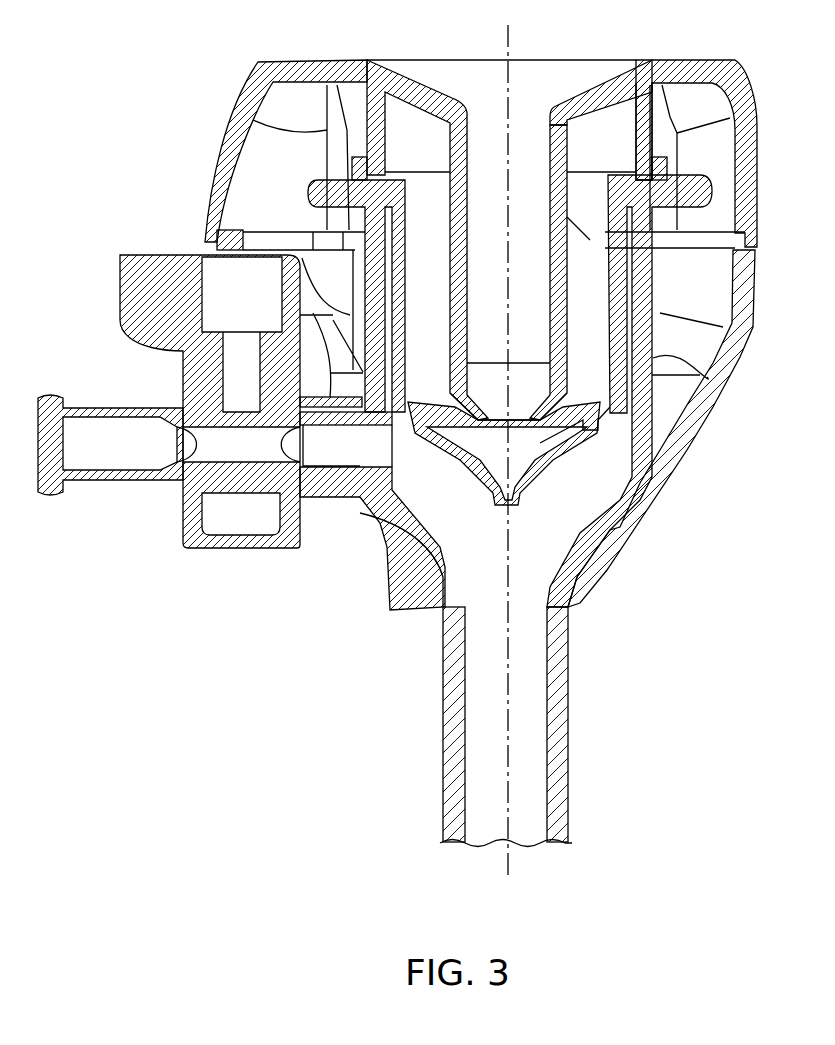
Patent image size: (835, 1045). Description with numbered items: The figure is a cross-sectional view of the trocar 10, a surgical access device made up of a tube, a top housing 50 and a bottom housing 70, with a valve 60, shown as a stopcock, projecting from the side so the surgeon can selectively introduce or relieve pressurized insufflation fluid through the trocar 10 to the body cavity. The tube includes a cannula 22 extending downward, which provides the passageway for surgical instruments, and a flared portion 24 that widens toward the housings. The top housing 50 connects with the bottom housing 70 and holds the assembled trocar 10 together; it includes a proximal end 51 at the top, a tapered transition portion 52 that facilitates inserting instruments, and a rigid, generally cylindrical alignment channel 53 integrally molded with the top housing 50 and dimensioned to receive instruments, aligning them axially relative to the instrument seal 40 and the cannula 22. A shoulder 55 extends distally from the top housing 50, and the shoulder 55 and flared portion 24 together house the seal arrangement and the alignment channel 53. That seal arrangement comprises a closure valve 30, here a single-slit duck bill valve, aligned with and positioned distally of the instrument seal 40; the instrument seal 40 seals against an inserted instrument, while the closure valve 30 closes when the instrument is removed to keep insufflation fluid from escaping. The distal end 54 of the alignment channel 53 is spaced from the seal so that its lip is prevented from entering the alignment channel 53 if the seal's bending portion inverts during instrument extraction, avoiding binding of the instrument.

The trocar 10 is at (416, 445).
The cannula 22 is at (568, 703).
The flared portion 24 is at (707, 377).
The closure valve 30 is at (460, 462).
The instrument seal 40 is at (367, 267).
The top housing 50 is at (757, 153).
The proximal end 51 is at (702, 61).
The tapered transition portion 52 is at (617, 70).
The alignment channel 53 is at (550, 248).
The distal end of the alignment channel 54 is at (553, 365).
The shoulder 55 is at (636, 148).
The valve 60 is at (182, 542).
The bottom housing 70 is at (712, 417).